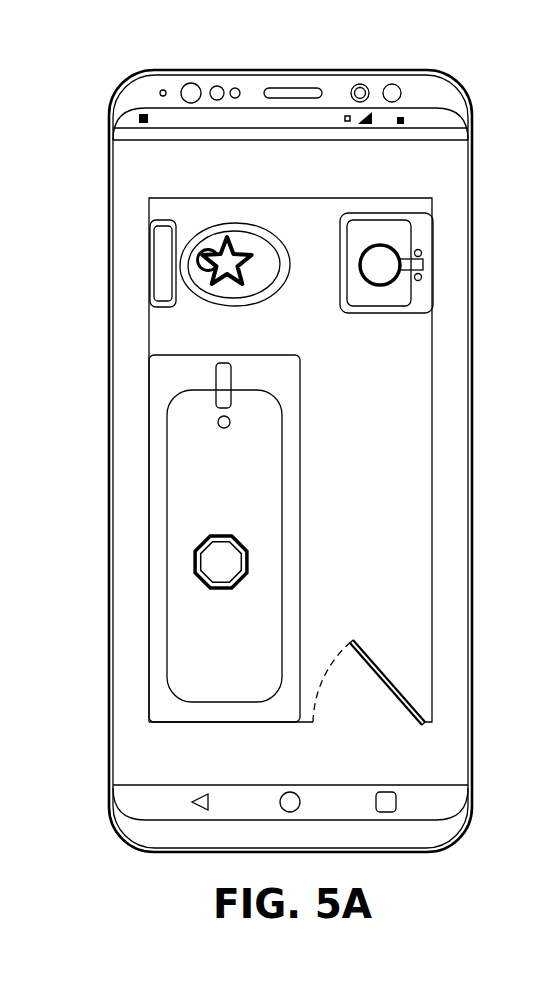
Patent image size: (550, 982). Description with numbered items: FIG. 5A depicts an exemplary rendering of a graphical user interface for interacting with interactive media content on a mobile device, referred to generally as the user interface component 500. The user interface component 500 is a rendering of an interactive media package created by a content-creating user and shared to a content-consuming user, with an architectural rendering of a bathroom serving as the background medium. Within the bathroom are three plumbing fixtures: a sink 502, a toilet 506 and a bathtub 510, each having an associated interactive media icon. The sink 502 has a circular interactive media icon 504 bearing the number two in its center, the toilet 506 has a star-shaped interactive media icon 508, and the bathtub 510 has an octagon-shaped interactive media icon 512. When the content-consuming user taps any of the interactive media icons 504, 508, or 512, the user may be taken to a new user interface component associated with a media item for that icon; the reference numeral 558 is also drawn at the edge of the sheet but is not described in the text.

The user interface component 500 is at (443, 51).
The sink 502 is at (420, 228).
The circular interactive media icon 504 is at (393, 285).
The toilet 506 is at (162, 242).
The star-shaped interactive media icon 508 is at (227, 282).
The bathtub 510 is at (187, 462).
The octagon-shaped interactive media icon 512 is at (219, 576).
The map display 558 is at (549, 588).